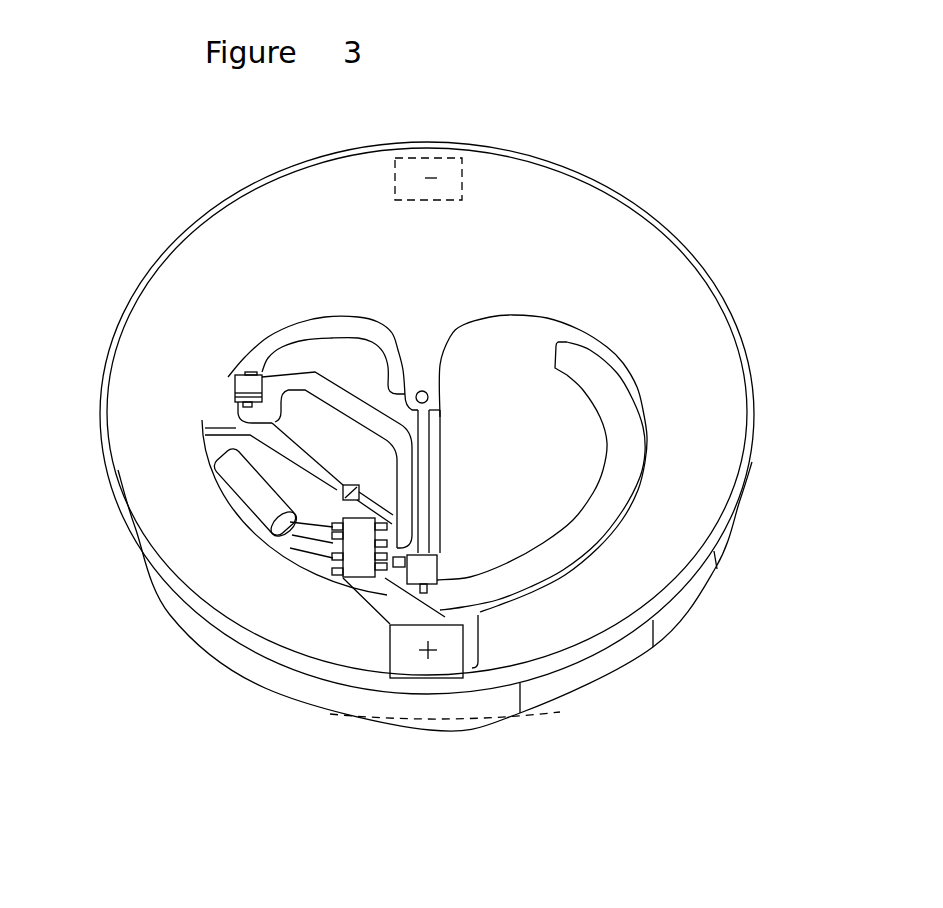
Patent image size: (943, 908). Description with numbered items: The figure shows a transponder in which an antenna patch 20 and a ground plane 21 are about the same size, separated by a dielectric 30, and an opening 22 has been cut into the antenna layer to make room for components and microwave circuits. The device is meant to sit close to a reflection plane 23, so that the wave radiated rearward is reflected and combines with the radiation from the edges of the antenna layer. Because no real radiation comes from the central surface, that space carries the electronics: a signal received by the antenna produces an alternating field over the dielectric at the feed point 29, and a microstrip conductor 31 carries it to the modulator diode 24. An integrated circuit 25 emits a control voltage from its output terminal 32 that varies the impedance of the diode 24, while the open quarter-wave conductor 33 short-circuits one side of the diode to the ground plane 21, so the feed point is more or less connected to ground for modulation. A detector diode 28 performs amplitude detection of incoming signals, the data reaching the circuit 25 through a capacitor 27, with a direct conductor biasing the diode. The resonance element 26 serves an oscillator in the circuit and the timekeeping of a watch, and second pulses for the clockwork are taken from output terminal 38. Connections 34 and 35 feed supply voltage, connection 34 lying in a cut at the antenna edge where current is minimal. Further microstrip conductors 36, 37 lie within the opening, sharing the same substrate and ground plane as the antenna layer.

The antenna patch 20 is at (653, 260).
The ground plane 21 is at (238, 677).
The opening 22 is at (505, 337).
The reflection plane 23 is at (665, 672).
The modulator diode 24 is at (422, 570).
The integrated circuit 25 is at (352, 560).
The resonance element 26 is at (250, 487).
The capacitor 27 is at (340, 505).
The detector diode 28 is at (240, 383).
The feed point 29 is at (428, 345).
The dielectric 30 is at (717, 567).
The microstrip conductor 31 is at (427, 523).
The output terminal 32 is at (365, 590).
The open quarter-wave conductor 33 is at (612, 400).
The connection 34 is at (432, 663).
The connection 35 is at (433, 172).
The microstrip conductor 36 is at (348, 341).
The microstrip conductor 37 is at (300, 377).
The output terminal 38 is at (390, 580).